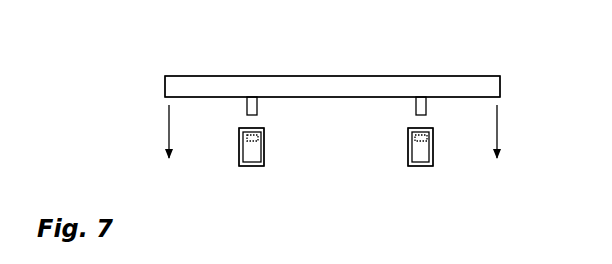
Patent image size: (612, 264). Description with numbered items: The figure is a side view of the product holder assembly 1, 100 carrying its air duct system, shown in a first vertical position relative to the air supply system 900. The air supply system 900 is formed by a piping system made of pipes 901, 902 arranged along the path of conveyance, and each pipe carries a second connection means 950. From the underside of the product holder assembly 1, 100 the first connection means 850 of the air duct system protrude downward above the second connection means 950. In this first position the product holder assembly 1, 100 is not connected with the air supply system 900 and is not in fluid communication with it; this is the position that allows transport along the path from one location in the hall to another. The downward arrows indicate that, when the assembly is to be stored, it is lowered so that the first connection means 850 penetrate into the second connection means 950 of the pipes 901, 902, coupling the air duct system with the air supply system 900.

The product holder assembly 1 is at (200, 83).
The structure 100 is at (332, 86).
The first connection means 850 is at (254, 105).
The second connection means 950 is at (252, 147).
The air supply system 900 is at (352, 183).
The pipe 901 is at (416, 150).
The pipe 902 is at (247, 157).